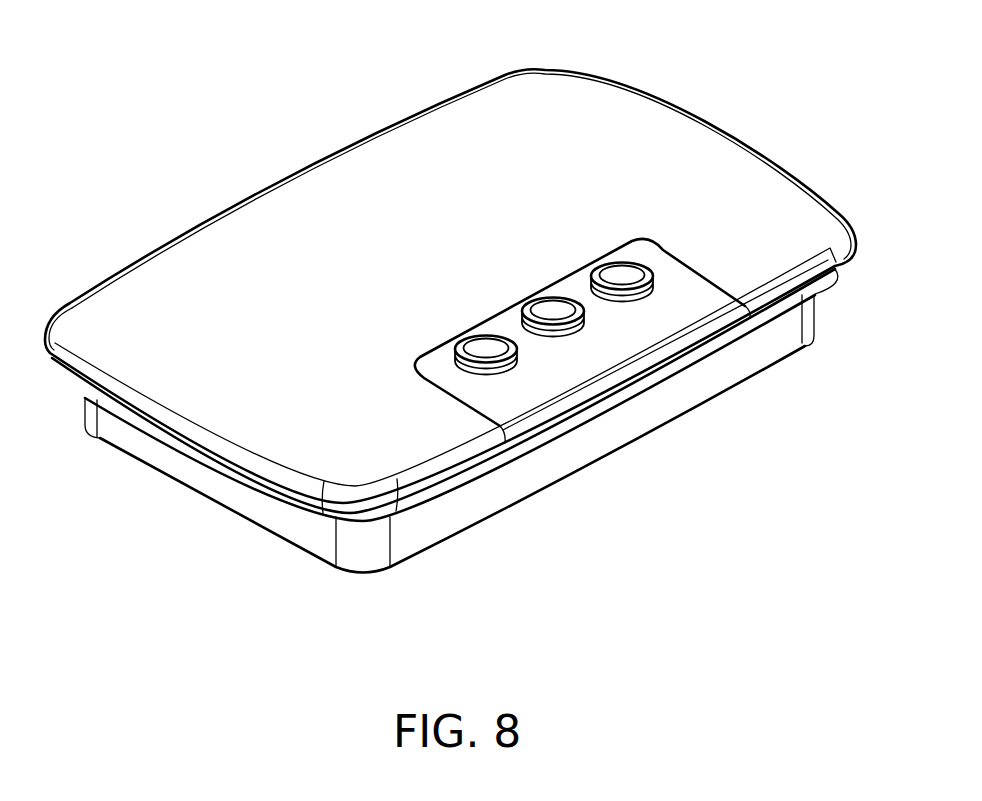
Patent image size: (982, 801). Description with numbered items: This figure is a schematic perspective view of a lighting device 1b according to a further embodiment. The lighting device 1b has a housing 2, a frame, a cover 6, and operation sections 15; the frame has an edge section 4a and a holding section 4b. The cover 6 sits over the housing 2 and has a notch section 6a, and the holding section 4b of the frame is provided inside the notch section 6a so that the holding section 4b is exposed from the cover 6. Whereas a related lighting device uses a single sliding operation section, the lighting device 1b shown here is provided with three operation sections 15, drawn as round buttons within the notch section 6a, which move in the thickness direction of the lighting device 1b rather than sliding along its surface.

The lighting device 1b is at (251, 136).
The housing 2 is at (465, 542).
The edge section 4a is at (275, 494).
The holding section 4b is at (613, 345).
The cover 6 is at (620, 134).
The notch section 6a is at (493, 410).
The operation section 15 is at (625, 272).